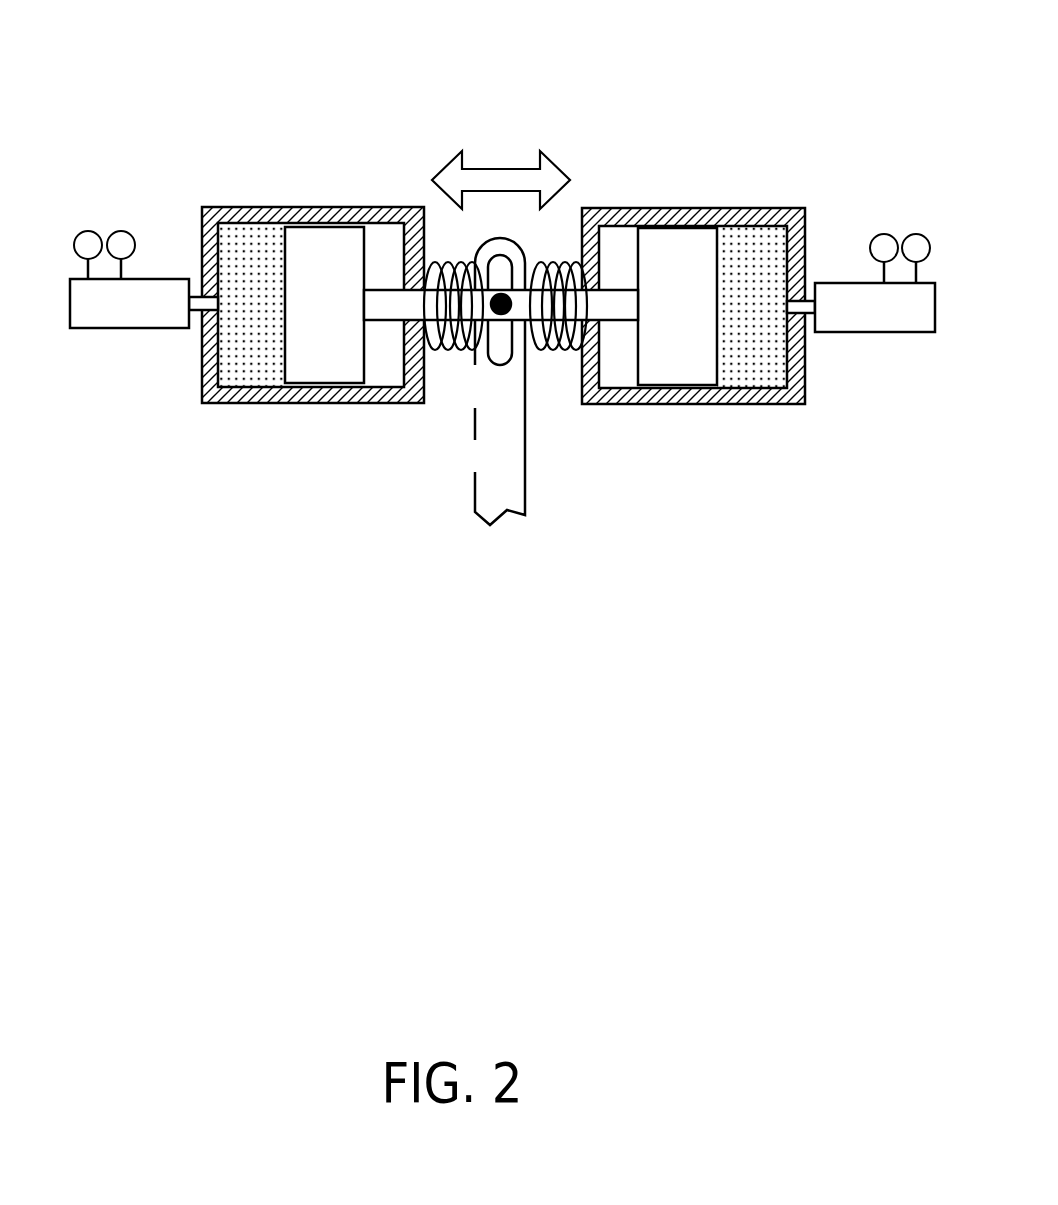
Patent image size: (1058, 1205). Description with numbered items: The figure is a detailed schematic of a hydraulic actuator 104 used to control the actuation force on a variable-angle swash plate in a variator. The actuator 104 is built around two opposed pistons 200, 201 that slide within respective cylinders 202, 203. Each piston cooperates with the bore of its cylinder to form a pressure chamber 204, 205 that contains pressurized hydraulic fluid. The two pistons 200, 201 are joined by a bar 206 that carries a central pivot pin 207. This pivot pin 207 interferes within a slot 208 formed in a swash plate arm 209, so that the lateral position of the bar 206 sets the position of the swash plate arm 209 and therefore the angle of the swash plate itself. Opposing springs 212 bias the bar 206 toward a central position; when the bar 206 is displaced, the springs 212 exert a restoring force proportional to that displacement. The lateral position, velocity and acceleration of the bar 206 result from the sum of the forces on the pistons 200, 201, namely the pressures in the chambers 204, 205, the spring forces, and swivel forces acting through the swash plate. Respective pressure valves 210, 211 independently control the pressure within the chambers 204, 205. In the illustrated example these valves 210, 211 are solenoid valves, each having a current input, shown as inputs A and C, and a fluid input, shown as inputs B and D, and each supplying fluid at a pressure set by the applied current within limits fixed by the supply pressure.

The hydraulic actuator 104 is at (598, 83).
The piston 200 is at (343, 232).
The piston 201 is at (675, 242).
The cylinder 202 is at (283, 207).
The cylinder 203 is at (750, 210).
The pressure chamber 204 is at (255, 368).
The pressure chamber 205 is at (743, 375).
The bar 206 is at (398, 295).
The central pivot pin 207 is at (498, 317).
The slot 208 is at (502, 365).
The swash plate arm 209 is at (492, 478).
The pressure valve 210 is at (132, 313).
The pressure valve 211 is at (872, 317).
The springs 212 is at (550, 350).